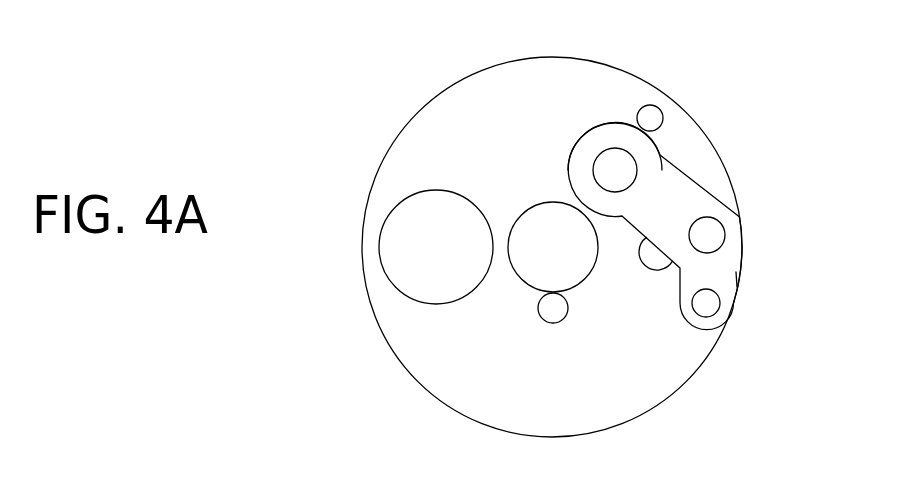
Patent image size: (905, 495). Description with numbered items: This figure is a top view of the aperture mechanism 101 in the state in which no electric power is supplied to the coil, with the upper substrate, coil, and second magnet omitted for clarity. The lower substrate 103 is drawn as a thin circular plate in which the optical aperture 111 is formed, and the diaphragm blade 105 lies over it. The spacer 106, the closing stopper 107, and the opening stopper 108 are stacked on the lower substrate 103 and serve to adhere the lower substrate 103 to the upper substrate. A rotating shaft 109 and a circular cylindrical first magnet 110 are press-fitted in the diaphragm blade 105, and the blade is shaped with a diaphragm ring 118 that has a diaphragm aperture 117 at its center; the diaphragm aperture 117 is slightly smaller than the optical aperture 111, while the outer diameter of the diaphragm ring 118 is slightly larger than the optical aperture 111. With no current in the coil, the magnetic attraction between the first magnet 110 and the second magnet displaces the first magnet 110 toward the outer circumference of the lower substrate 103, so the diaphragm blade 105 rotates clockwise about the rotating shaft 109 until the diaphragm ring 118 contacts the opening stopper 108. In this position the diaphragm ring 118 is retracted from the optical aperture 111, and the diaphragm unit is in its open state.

The aperture mechanism 101 is at (360, 166).
The lower substrate 103 is at (452, 112).
The diaphragm blade 105 is at (675, 190).
The spacer 106 is at (404, 294).
The closing stopper 107 is at (560, 308).
The opening stopper 108 is at (652, 115).
The rotating shaft 109 is at (705, 303).
The first magnet 110 is at (715, 237).
The optical aperture 111 is at (508, 239).
The diaphragm aperture 117 is at (604, 187).
The diaphragm ring 118 is at (618, 133).